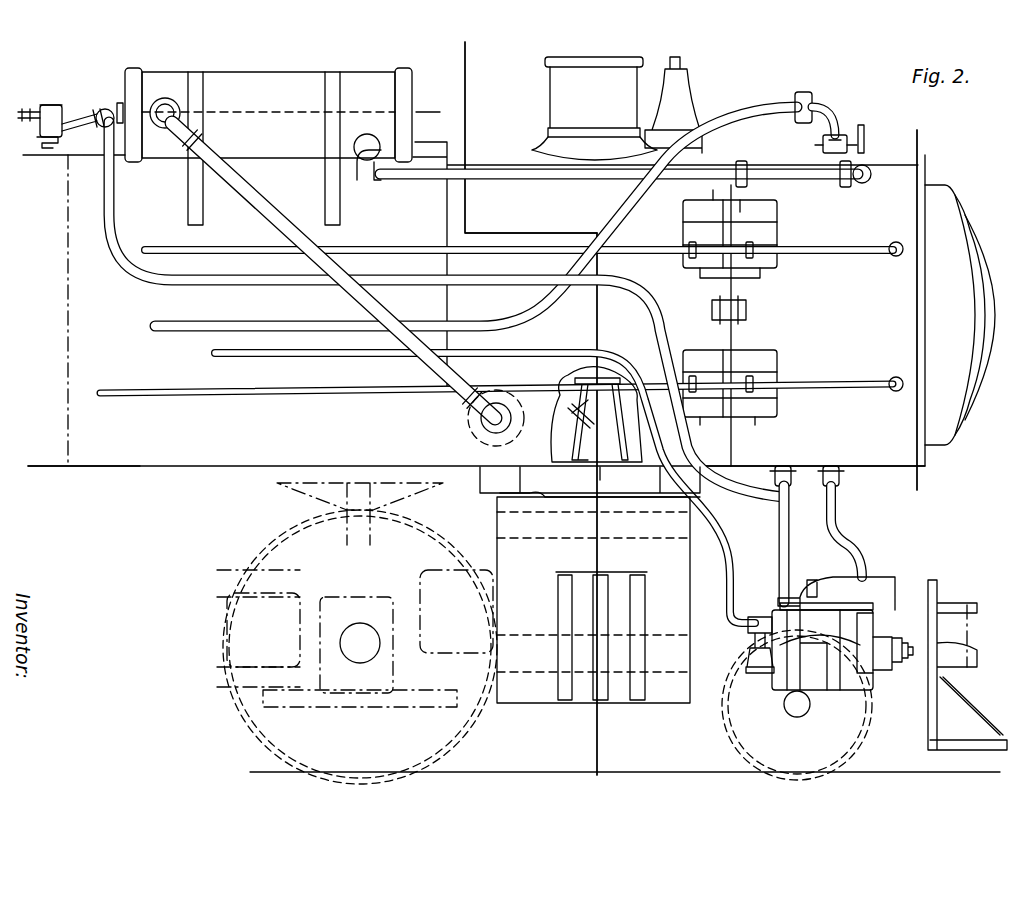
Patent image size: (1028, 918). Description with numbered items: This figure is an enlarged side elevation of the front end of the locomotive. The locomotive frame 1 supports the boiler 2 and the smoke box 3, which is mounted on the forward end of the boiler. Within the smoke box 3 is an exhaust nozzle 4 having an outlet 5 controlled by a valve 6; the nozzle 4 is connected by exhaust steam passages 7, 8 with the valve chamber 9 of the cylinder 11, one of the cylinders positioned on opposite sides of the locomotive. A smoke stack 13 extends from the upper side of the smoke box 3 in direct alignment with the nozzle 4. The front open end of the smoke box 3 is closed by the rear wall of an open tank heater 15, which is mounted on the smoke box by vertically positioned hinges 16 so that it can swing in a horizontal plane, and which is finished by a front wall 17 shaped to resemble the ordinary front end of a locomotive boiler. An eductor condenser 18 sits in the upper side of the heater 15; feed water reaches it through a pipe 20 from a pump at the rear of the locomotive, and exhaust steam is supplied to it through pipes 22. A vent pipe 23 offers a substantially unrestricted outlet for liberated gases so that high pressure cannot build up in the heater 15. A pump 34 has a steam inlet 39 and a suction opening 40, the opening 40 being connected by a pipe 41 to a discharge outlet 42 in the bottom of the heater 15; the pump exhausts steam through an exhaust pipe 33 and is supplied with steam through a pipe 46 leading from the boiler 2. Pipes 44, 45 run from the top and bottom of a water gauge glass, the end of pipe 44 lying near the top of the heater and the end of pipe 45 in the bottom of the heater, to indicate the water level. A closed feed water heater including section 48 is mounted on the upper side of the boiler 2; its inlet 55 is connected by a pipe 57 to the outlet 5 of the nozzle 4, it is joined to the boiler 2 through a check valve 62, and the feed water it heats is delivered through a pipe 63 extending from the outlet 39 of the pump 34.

The locomotive frame 1 is at (608, 633).
The boiler 2 is at (139, 465).
The smoke box 3 is at (474, 408).
The exhaust nozzle 4 is at (620, 395).
The outlet 5 is at (560, 400).
The valve 6 is at (585, 404).
The exhaust steam passage 7 is at (529, 414).
The exhaust steam passage 8 is at (438, 113).
The valve chamber 9 is at (558, 496).
The cylinder 11 is at (533, 702).
The smoke stack 13 is at (594, 108).
The open tank heater 15 is at (812, 378).
The hinges 16 is at (763, 226).
The front wall 17 is at (975, 311).
The eductor condenser 18 is at (830, 138).
The pipe 20 is at (186, 328).
The pipes 22 is at (528, 181).
The vent pipe 23 is at (865, 140).
The exhaust pipe 33 is at (778, 518).
The pump 34 is at (862, 630).
The steam inlet 39 is at (760, 615).
The suction opening 40 is at (878, 603).
The pipe 41 is at (847, 542).
The discharge outlet 42 is at (845, 480).
The pipe 44 is at (388, 248).
The pipe 45 is at (348, 396).
The pipe 46 is at (287, 358).
The section of closed feed water heater 48 is at (264, 146).
The inlet 55 is at (170, 100).
The pipe 57 is at (268, 200).
The check valve 62 is at (78, 115).
The pipe 63 is at (113, 217).